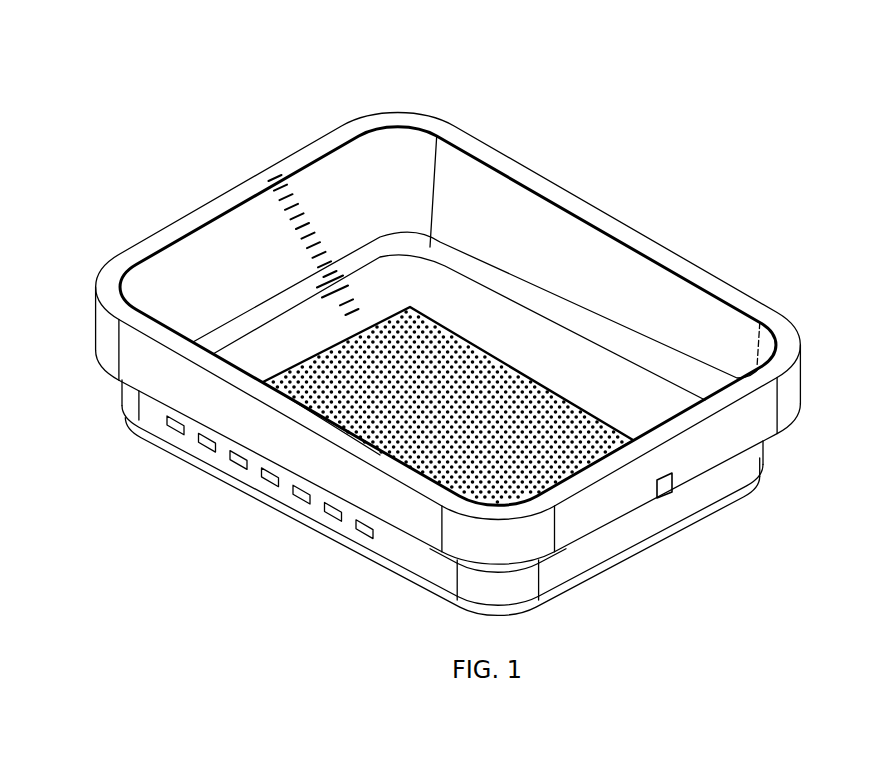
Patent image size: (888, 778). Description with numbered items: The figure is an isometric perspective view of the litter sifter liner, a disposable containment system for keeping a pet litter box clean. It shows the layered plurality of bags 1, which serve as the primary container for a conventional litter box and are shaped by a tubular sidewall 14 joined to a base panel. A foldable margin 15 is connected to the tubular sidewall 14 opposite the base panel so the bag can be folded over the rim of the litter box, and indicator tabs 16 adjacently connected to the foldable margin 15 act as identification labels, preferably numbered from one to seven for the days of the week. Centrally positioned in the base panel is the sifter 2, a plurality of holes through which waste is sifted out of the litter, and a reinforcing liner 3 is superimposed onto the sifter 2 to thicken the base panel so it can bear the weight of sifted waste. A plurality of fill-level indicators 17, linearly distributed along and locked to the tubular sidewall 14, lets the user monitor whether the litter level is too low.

The plurality of bags 1 is at (808, 327).
The sifter 2 is at (410, 305).
The reinforcing liner 3 is at (520, 346).
The tubular sidewall 14 is at (620, 236).
The foldable margin 15 is at (345, 132).
The indicator tab 16 is at (175, 418).
The plurality of fill-level indicators 17 is at (270, 241).